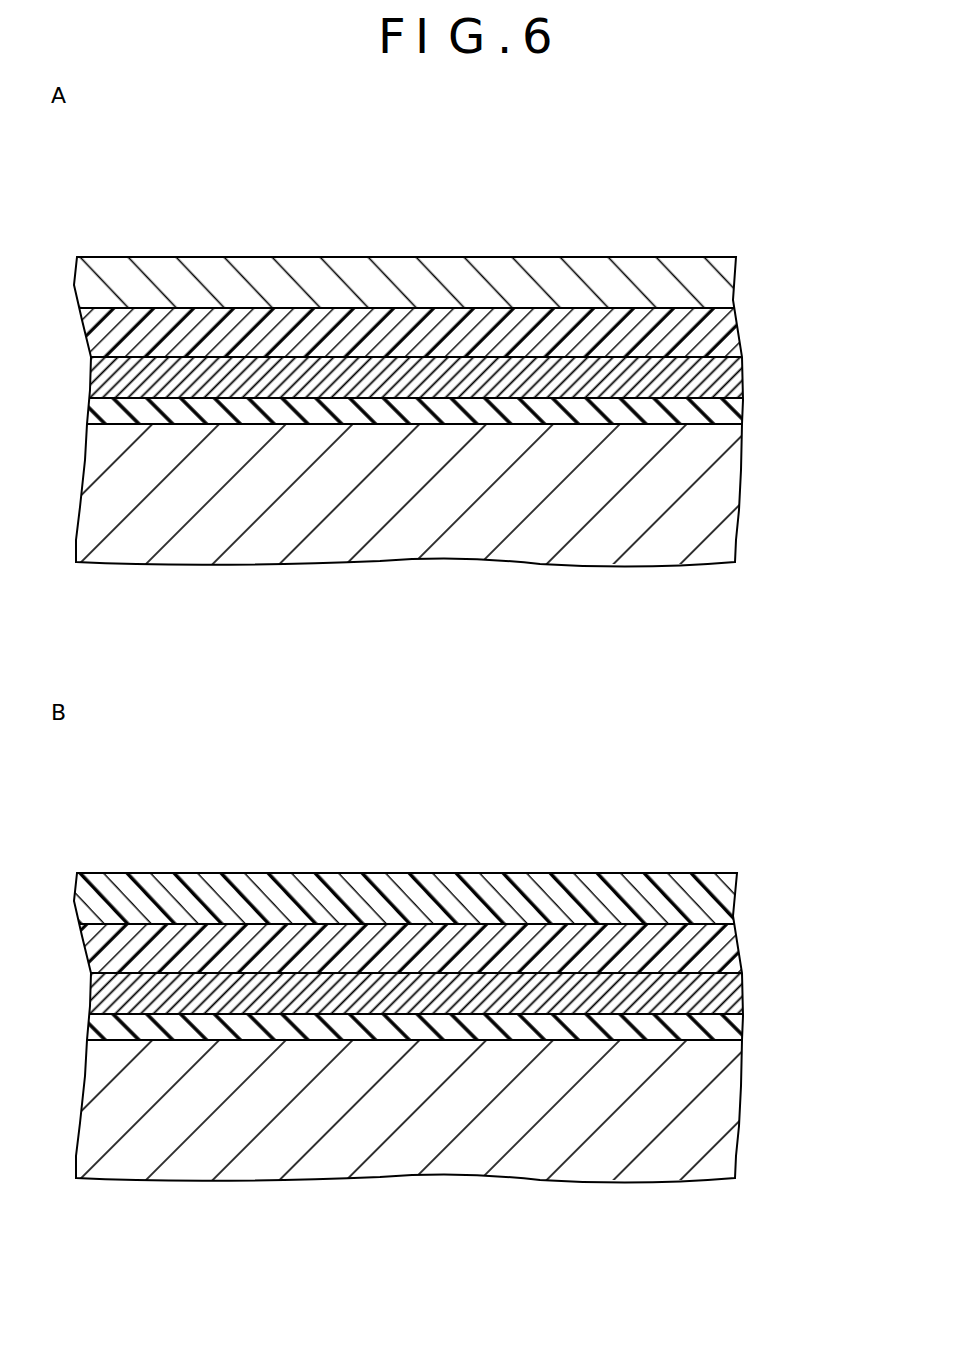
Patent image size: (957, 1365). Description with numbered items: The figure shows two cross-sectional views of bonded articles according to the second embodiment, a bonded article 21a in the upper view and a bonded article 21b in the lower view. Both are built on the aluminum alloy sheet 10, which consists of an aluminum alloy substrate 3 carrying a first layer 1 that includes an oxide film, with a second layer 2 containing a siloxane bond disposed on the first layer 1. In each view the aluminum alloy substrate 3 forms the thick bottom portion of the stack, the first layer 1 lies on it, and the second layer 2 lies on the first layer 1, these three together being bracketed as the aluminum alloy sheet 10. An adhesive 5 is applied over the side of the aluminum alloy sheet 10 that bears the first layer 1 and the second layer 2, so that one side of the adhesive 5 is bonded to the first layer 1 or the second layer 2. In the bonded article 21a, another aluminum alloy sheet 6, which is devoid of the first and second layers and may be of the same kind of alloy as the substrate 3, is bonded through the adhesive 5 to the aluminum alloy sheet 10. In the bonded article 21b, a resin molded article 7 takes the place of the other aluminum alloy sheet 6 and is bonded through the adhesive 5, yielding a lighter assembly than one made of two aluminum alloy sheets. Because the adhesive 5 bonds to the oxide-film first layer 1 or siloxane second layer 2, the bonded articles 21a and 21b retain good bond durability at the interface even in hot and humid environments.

In FIG. 6A, the first layer 1 is at (715, 412).
In FIG. 6B, the first layer 1 is at (717, 1027).
In FIG. 6A, the second layer 2 is at (713, 373).
In FIG. 6B, the second layer 2 is at (713, 988).
In FIG. 6A, the aluminum alloy substrate 3 is at (433, 494).
In FIG. 6B, the aluminum alloy substrate 3 is at (433, 1110).
In FIG. 6A, the adhesive 5 is at (717, 328).
In FIG. 6B, the adhesive 5 is at (717, 947).
In FIG. 6A, the other aluminum alloy sheet 6 is at (717, 278).
In FIG. 6B, the resin molded article 7 is at (717, 895).
In FIG. 6A, the aluminum alloy sheet 10 is at (468, 457).
In FIG. 6B, the aluminum alloy sheet 10 is at (468, 1072).
In FIG. 6A, the bonded article 21a is at (597, 184).
In FIG. 6B, the bonded article 21b is at (598, 801).